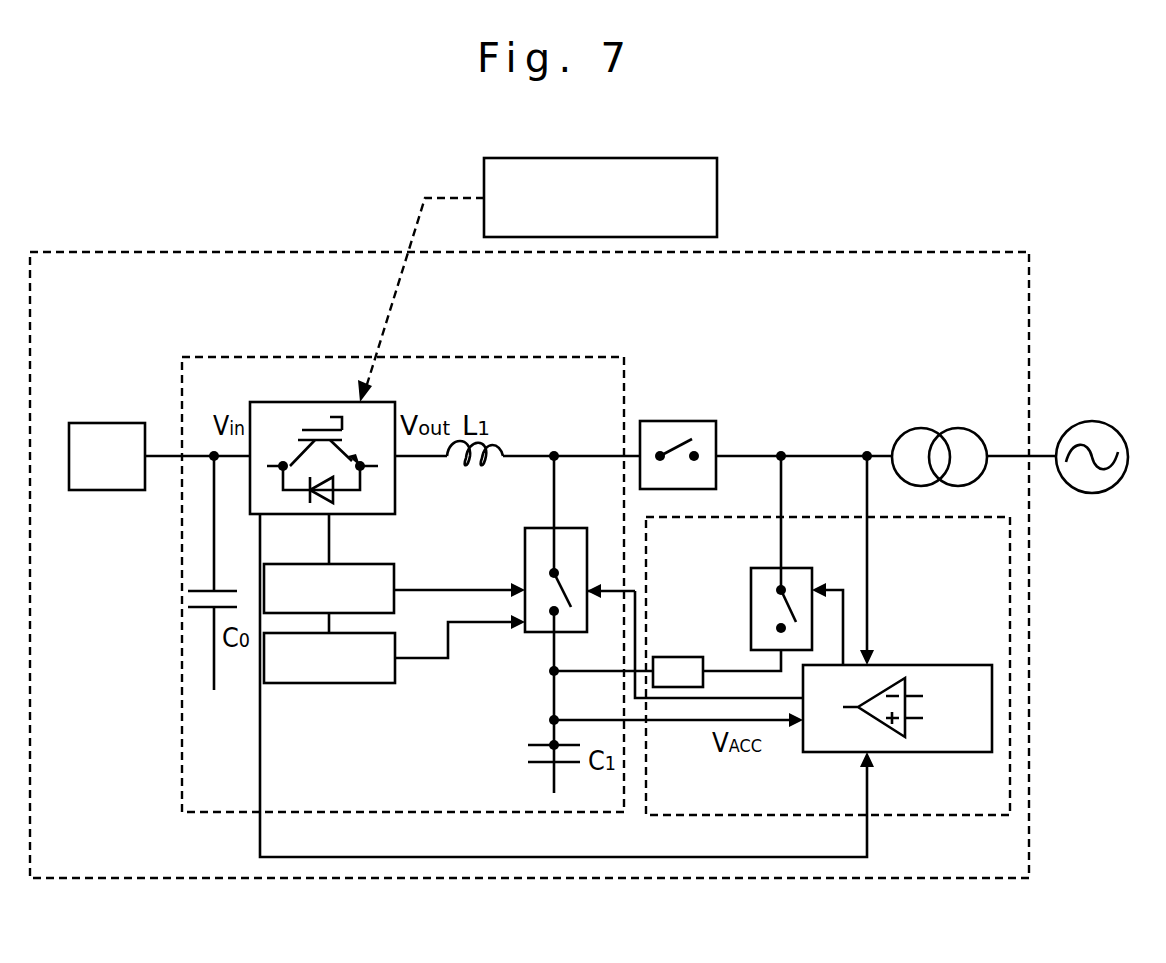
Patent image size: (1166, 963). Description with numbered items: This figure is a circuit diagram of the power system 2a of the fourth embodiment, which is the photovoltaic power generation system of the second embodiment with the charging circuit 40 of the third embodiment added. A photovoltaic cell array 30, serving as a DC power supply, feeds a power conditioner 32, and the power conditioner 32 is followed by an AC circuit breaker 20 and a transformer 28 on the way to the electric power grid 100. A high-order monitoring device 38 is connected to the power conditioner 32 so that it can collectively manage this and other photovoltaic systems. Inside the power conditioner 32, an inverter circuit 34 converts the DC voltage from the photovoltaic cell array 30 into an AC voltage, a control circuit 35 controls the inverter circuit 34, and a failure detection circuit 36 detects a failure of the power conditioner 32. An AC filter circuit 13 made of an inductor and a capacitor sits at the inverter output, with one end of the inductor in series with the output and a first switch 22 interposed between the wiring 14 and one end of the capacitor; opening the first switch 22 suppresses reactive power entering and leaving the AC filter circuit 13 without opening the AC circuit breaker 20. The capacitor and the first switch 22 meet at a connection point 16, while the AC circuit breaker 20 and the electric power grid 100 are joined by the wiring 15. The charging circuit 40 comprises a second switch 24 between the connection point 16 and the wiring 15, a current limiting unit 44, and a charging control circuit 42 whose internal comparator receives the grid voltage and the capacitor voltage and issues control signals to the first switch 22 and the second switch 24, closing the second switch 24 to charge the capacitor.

The power system 2a is at (147, 252).
The photovoltaic cell array 30 is at (105, 422).
The power conditioner 32 is at (228, 357).
The inverter circuit 34 is at (312, 402).
The control circuit 35 is at (388, 564).
The failure detection circuit 36 is at (330, 683).
The high-order monitoring device 38 is at (717, 200).
The AC filter circuit 13 is at (504, 663).
The wiring 14 is at (533, 448).
The wiring 15 is at (818, 452).
The connection point 16 is at (549, 676).
The AC circuit breaker 20 is at (672, 421).
The first switch 22 is at (525, 544).
The second switch 24 is at (750, 585).
The transformer 28 is at (915, 428).
The charging circuit 40 is at (937, 817).
The charging control circuit 42 is at (970, 665).
The current limiting unit 44 is at (672, 657).
The electric power grid 100 is at (1092, 421).